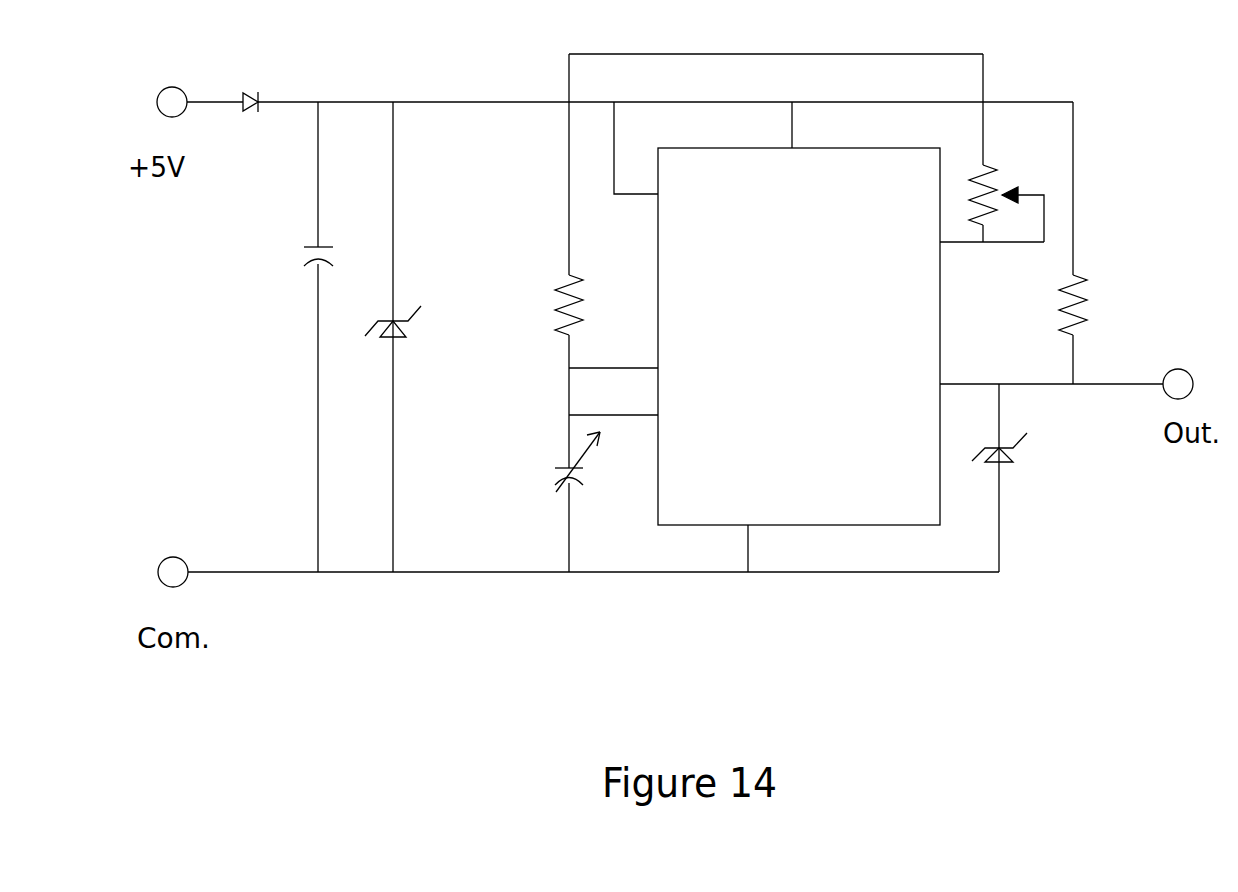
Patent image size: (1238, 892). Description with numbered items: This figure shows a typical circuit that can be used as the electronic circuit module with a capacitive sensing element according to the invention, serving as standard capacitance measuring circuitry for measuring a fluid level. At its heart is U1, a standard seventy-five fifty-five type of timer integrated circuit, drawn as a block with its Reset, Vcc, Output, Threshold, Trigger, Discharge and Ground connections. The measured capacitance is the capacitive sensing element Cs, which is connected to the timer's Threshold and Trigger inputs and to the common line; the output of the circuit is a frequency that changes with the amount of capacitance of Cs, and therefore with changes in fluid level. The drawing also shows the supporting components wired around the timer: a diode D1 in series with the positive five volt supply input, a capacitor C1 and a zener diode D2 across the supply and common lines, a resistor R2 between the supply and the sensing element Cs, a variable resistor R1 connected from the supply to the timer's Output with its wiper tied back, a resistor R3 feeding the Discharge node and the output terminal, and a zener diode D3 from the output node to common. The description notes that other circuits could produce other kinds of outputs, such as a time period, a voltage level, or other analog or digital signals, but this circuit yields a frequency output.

The diode D1 is at (244, 78).
The capacitor C1 is at (301, 337).
The zener diode D2 is at (404, 337).
The resistor R2 is at (551, 194).
The capacitive sensing element Cs is at (557, 453).
The timer integrated circuit U1 is at (799, 336).
The variable resistor (potentiometer) R1 is at (1008, 148).
The resistor R3 is at (1098, 243).
The zener diode D3 is at (1025, 478).